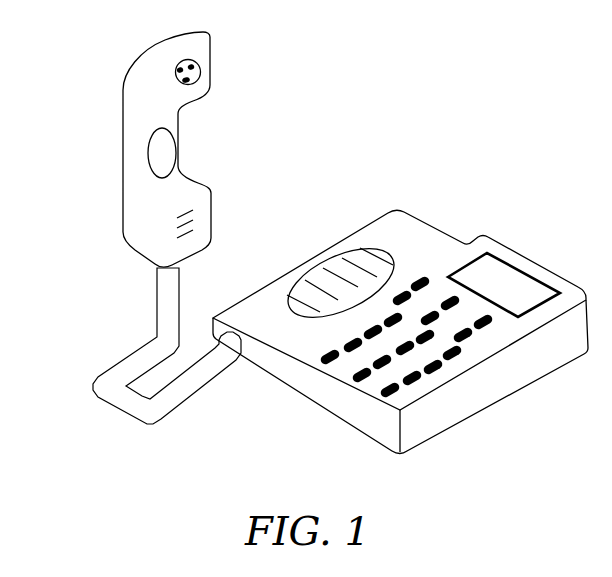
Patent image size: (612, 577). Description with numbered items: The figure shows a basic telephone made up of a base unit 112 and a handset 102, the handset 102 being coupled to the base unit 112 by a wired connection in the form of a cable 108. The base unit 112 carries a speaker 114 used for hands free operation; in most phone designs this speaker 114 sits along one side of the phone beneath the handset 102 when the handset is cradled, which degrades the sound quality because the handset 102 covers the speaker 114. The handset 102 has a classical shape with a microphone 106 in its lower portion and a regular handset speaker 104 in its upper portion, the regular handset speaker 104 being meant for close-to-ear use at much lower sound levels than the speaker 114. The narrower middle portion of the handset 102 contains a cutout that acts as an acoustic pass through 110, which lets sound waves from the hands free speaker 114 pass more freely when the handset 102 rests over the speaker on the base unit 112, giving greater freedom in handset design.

The handset 102 is at (123, 55).
The regular handset speaker 104 is at (206, 46).
The microphone 106 is at (192, 193).
The cable 108 is at (113, 356).
The acoustic pass through 110 is at (154, 150).
The base unit 112 is at (415, 193).
The speaker 114 is at (318, 270).